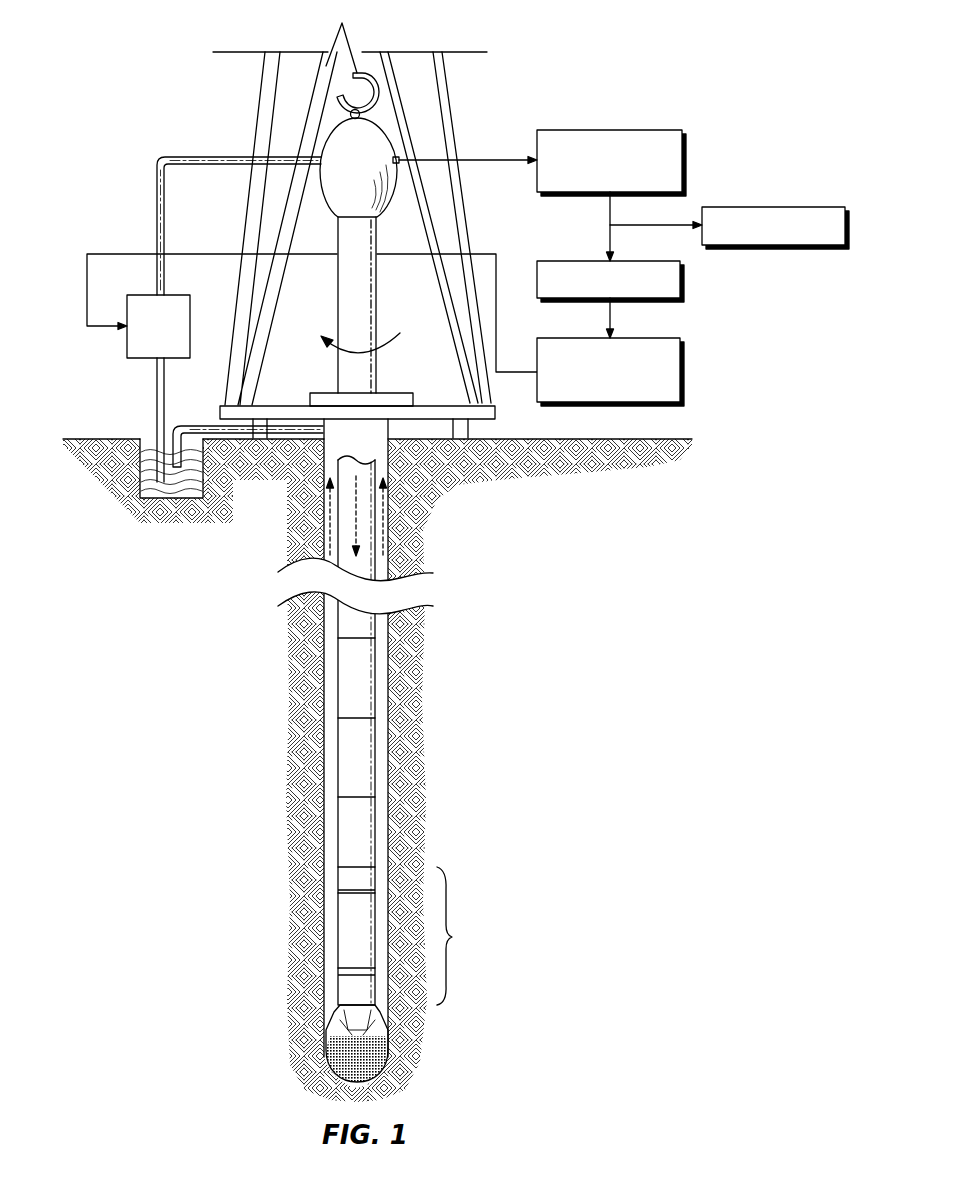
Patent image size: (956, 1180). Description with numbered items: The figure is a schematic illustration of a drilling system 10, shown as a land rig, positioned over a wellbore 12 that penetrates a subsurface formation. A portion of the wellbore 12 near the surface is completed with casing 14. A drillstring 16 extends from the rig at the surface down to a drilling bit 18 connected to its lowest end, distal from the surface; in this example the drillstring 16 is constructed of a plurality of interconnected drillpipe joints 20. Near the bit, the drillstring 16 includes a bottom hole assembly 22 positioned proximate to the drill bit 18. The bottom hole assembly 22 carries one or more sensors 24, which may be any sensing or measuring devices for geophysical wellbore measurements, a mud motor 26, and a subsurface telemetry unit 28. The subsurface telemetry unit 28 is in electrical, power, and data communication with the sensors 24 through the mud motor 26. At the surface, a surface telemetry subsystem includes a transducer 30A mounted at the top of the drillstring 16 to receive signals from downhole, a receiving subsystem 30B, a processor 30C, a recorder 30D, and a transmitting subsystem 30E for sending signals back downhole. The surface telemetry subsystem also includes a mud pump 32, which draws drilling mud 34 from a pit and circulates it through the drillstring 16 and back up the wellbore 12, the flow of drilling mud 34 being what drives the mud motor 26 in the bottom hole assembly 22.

The drilling system 10 is at (643, 528).
The wellbore 12 is at (382, 572).
The casing 14 is at (382, 433).
The drillstring 16 is at (343, 617).
The drilling bit 18 is at (335, 1040).
The drillpipe joints 20 is at (348, 820).
The bottom hole assembly 22 is at (461, 936).
The sensors 24 is at (345, 985).
The mud motor 26 is at (345, 937).
The subsurface telemetry unit 28 is at (345, 880).
The transducer 30A is at (398, 165).
The receiving subsystem 30B is at (607, 129).
The processor 30C is at (773, 206).
The recorder 30D is at (578, 258).
The transmitting subsystem 30E is at (578, 338).
The mud pump 32 is at (143, 362).
The drilling mud 34 is at (153, 493).